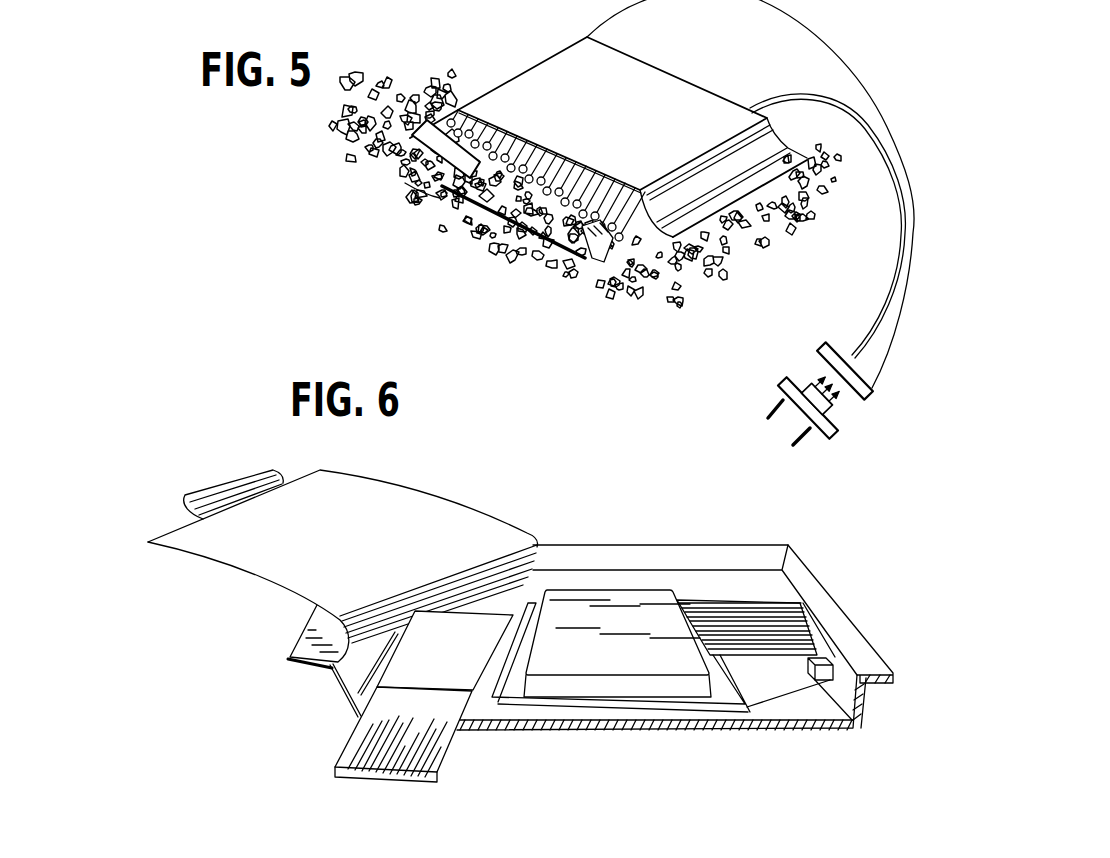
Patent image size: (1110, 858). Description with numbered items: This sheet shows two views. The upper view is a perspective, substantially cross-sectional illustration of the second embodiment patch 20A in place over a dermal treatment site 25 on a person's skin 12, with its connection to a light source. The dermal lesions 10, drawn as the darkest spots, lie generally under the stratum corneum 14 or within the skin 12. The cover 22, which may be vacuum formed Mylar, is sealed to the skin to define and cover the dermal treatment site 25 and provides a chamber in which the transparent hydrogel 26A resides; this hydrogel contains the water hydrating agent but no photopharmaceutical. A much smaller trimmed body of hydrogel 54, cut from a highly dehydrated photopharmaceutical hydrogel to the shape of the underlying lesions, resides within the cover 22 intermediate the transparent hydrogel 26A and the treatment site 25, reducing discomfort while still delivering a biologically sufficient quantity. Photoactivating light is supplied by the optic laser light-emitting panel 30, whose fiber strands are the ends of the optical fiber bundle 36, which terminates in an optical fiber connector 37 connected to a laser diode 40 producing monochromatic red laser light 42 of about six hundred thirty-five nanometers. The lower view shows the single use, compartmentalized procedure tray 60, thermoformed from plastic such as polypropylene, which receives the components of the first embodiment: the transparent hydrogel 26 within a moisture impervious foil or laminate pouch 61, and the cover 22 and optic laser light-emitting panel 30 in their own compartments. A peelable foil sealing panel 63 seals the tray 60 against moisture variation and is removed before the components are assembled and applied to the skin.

In FIG. 5, the dermal lesions 10 is at (472, 227).
In FIG. 5, the skin 12 is at (352, 176).
In FIG. 5, the stratum corneum 14 is at (410, 80).
In FIG. 5, the patch 20A is at (576, 64).
In FIG. 5, the cover 22 is at (777, 132).
In FIG. 6, the cover 22 is at (590, 687).
In FIG. 5, the dermal treatment site 25 is at (403, 185).
In FIG. 6, the transparent hydrogel 26 is at (445, 757).
In FIG. 5, the transparent hydrogel 26A is at (466, 150).
In FIG. 6, the optic laser light-emitting panel 30 is at (730, 597).
In FIG. 5, the optical fiber bundle 36 is at (840, 57).
In FIG. 5, the optical fiber connector 37 is at (872, 398).
In FIG. 5, the laser diode 40 is at (835, 432).
In FIG. 5, the laser light 42 is at (818, 374).
In FIG. 5, the body of hydrogel 54 is at (528, 158).
In FIG. 6, the procedure tray 60 is at (637, 526).
In FIG. 6, the pouch 61 is at (470, 667).
In FIG. 6, the sealing panel 63 is at (496, 507).